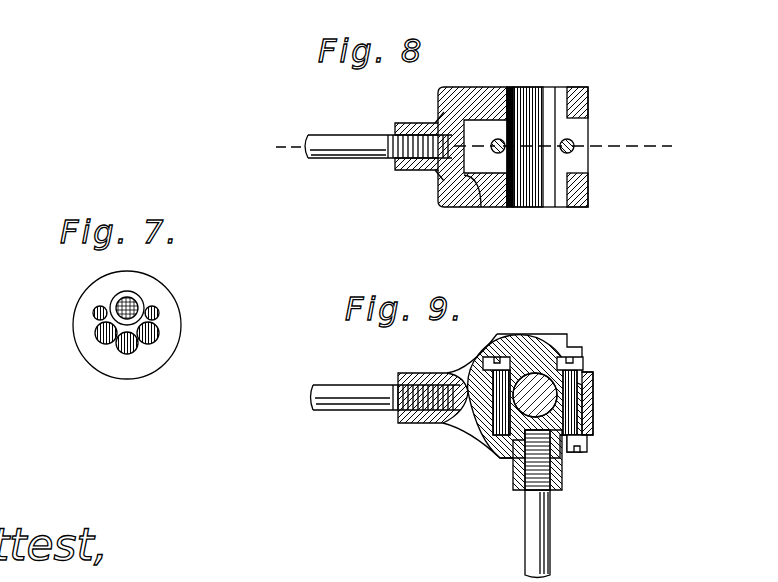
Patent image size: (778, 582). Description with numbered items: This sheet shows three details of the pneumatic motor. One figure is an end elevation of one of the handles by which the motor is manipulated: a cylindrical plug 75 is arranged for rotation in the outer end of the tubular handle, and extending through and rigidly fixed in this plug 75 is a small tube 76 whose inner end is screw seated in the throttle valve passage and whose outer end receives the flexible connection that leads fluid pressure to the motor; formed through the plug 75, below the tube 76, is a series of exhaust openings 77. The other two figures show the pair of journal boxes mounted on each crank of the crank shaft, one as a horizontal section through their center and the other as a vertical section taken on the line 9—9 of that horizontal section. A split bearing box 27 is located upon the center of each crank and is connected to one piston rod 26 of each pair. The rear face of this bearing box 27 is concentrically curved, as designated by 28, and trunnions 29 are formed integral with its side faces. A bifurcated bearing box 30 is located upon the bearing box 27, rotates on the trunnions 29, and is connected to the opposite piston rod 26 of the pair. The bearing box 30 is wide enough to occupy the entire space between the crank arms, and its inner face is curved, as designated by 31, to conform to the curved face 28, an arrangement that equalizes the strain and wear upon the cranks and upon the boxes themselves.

In FIG. 8, the section line 9— 9 is at (473, 148).
In FIG. 8, the piston rod 26 is at (348, 145).
In FIG. 9, the piston rod 26 is at (348, 410).
In FIG. 8, the split bearing box 27 is at (578, 163).
In FIG. 9, the split bearing box 27 is at (593, 417).
In FIG. 8, the concentrically curved rear face 28 is at (477, 208).
In FIG. 9, the concentrically curved rear face 28 is at (472, 370).
In FIG. 8, the trunnions 29 is at (558, 92).
In FIG. 8, the bifurcated bearing box 30 is at (473, 97).
In FIG. 9, the bifurcated bearing box 30 is at (550, 335).
In FIG. 8, the curved inner face 31 is at (438, 170).
In FIG. 9, the curved inner face 31 is at (457, 423).
In FIG. 7, the cylindrical plug 75 is at (82, 296).
In FIG. 7, the small tube 76 is at (137, 305).
In FIG. 7, the exhaust openings 77 is at (125, 352).